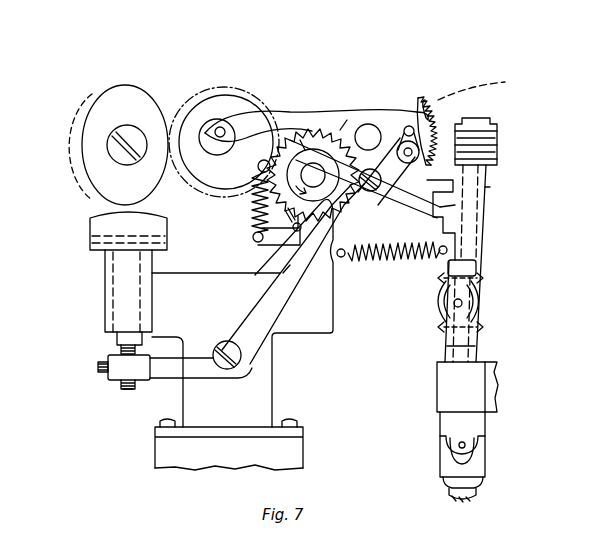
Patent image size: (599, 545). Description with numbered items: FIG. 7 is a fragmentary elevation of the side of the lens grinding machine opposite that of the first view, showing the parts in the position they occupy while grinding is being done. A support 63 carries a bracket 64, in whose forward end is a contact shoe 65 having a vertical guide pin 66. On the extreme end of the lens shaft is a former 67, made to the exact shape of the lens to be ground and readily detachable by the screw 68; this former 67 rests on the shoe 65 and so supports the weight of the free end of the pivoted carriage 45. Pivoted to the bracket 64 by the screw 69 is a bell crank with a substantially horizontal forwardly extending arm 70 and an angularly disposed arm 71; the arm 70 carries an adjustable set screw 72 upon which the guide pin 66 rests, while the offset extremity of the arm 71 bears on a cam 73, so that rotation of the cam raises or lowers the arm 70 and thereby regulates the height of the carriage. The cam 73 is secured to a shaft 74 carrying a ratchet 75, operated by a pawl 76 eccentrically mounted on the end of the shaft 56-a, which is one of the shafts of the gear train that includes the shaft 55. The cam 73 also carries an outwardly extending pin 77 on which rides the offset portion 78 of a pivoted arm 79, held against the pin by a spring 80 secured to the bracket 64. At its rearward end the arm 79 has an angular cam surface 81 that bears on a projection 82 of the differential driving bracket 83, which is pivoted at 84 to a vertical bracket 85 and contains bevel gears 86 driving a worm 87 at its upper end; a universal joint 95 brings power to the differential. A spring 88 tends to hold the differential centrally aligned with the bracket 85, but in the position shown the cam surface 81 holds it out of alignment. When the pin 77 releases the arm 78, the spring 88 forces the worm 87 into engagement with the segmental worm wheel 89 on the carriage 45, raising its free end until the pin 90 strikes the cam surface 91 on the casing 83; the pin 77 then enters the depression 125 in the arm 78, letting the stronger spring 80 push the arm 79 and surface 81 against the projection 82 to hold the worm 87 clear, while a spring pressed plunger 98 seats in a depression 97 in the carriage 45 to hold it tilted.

The carriage 45 is at (345, 118).
The shaft 55 is at (369, 126).
The shaft 56-a is at (220, 158).
The support 63 is at (172, 450).
The bracket 64 is at (263, 383).
The contact shoe 65 is at (100, 216).
The vertical guide pin 66 is at (122, 340).
The former 67 is at (118, 182).
The screw 68 is at (108, 145).
The screw 69 is at (283, 362).
The horizontal forwardly extending arm 70 is at (160, 376).
The angularly disposed arm 71 is at (285, 303).
The set screw 72 is at (121, 387).
The cam 73 is at (275, 260).
The shaft 74 is at (318, 160).
The ratchet 75 is at (300, 140).
The pawl 76 is at (264, 118).
The pin 77 is at (258, 215).
The offset portion 78 is at (256, 212).
The pivoted arm 79 is at (392, 182).
The spring 80 is at (262, 239).
The angular cam surface 81 is at (462, 234).
The projection 82 is at (444, 213).
The differential driving bracket 83 is at (452, 182).
The pivot 84 is at (463, 303).
The vertical bracket 85 is at (468, 372).
The bevel gears 86 is at (436, 283).
The worm 87 is at (498, 141).
The spring 88 is at (360, 256).
The segmental worm wheel 89 is at (428, 104).
The pin 90 is at (466, 97).
The cam surface 91 is at (487, 187).
The universal joint 95 is at (487, 436).
The depression 97 is at (411, 126).
The spring pressed plunger 98 is at (406, 141).
The depression 125 is at (313, 130).